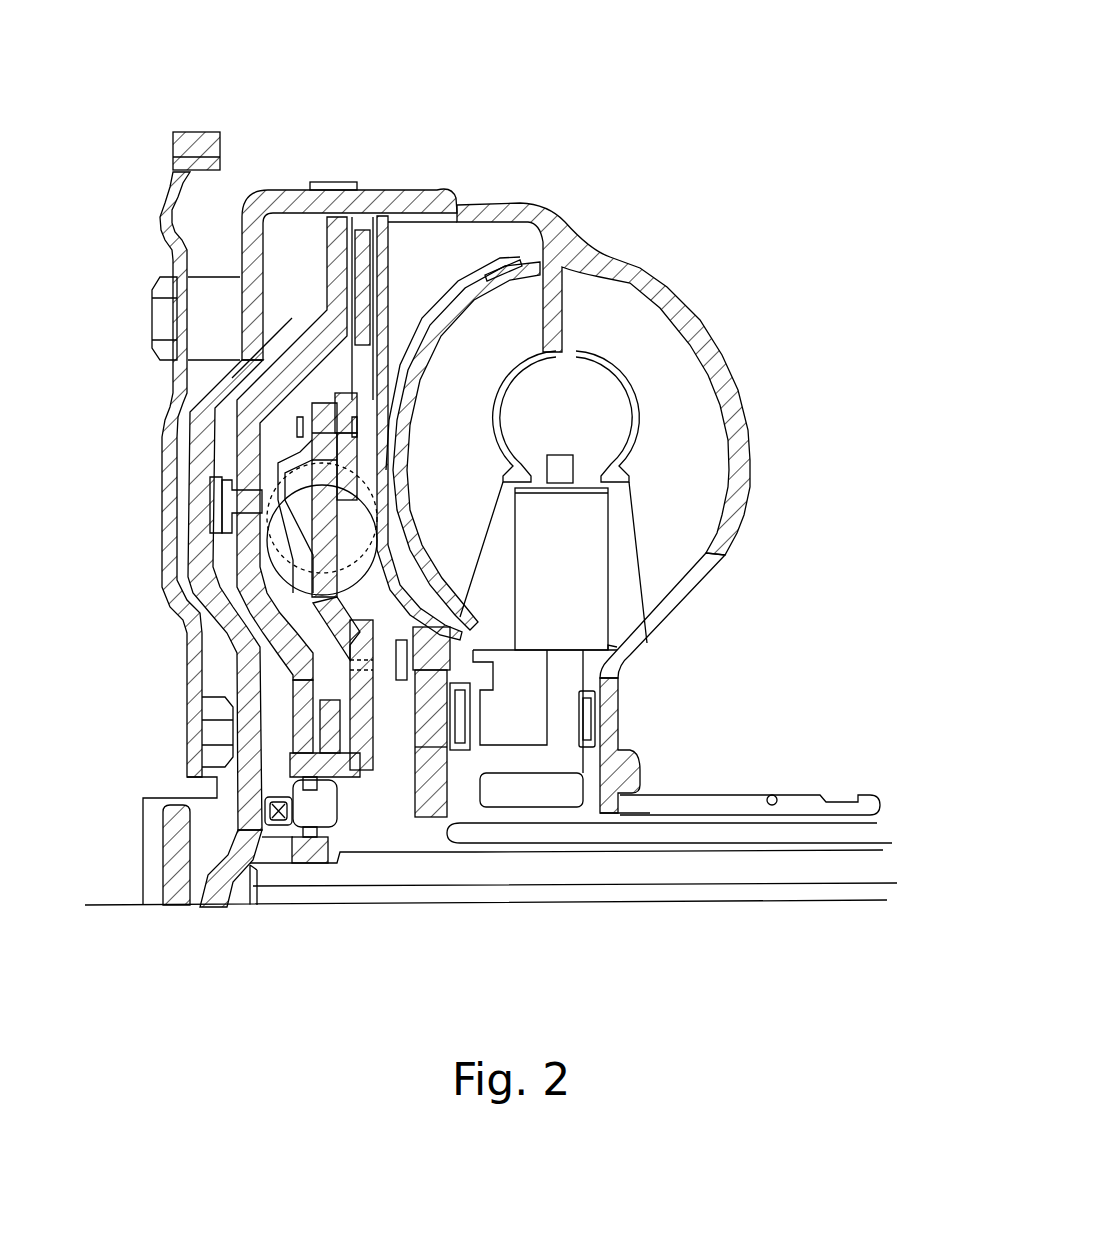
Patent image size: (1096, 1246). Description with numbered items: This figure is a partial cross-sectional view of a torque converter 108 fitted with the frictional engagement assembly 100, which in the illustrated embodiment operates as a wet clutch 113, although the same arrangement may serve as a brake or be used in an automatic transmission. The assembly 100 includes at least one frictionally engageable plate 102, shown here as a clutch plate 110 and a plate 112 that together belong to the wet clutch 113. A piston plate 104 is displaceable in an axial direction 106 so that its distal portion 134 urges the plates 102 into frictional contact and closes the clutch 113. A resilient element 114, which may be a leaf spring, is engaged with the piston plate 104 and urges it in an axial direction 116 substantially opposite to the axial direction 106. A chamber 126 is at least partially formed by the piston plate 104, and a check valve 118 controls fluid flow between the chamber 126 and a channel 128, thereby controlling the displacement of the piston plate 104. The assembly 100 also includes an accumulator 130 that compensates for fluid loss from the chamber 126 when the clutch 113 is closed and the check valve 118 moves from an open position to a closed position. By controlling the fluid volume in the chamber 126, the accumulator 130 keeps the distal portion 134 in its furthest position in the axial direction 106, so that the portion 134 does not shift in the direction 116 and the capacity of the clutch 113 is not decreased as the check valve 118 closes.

The frictional engagement assembly 100 is at (150, 185).
The frictionally engageable plate 102 is at (357, 178).
The piston plate 104 is at (240, 424).
The axial direction 106 is at (852, 90).
The torque converter 108 is at (530, 203).
The clutch plate 110 is at (370, 207).
The plate 112 is at (425, 215).
The wet clutch 113 is at (400, 280).
The resilient element 114 is at (213, 492).
The axial direction 116 is at (775, 125).
The check valve 118 is at (278, 828).
The chamber 126 is at (277, 697).
The channel 128 is at (238, 897).
The accumulator 130 is at (153, 585).
The distal portion 134 is at (280, 193).